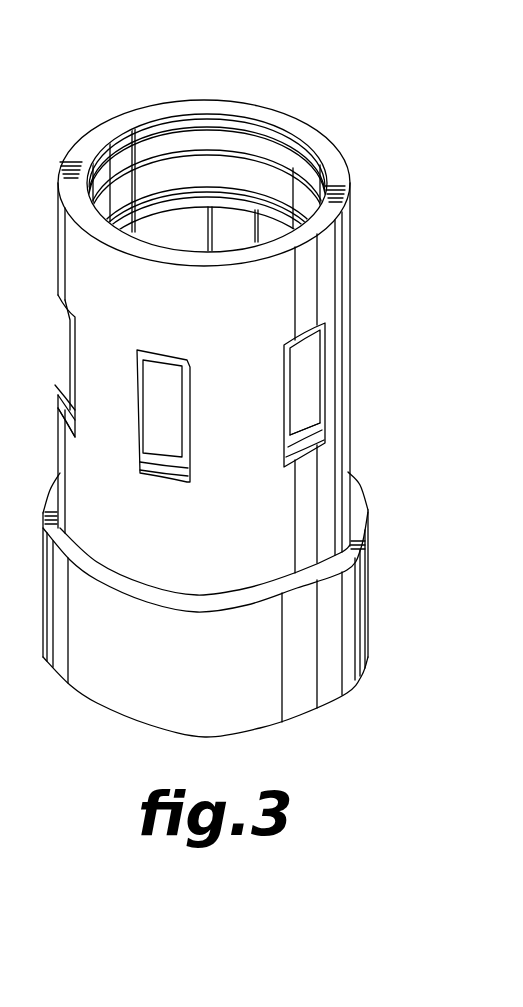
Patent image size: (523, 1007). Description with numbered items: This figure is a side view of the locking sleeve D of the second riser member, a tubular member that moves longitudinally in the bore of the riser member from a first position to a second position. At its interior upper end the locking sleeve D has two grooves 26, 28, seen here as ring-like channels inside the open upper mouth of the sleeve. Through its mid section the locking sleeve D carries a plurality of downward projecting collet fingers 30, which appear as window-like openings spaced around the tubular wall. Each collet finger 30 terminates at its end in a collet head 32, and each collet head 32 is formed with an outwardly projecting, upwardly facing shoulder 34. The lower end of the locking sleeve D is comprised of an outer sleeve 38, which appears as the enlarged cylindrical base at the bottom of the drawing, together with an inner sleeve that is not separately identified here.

The groove 26 is at (222, 143).
The groove 28 is at (278, 196).
The locking sleeve D is at (340, 282).
The collet finger 30 is at (312, 382).
The outwardly projecting upwardly facing shoulder 34 is at (328, 420).
The collet head 32 is at (287, 458).
The outer sleeve 38 is at (360, 625).